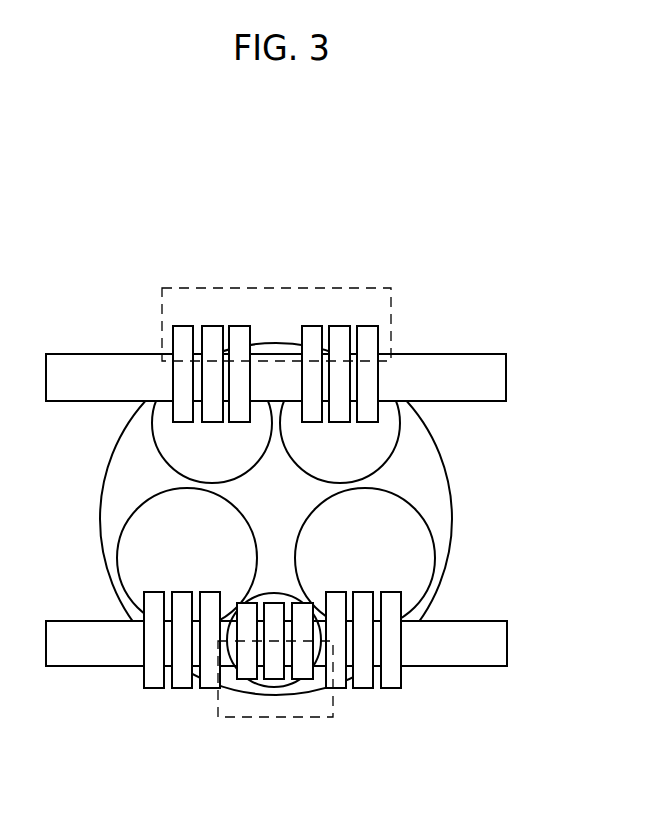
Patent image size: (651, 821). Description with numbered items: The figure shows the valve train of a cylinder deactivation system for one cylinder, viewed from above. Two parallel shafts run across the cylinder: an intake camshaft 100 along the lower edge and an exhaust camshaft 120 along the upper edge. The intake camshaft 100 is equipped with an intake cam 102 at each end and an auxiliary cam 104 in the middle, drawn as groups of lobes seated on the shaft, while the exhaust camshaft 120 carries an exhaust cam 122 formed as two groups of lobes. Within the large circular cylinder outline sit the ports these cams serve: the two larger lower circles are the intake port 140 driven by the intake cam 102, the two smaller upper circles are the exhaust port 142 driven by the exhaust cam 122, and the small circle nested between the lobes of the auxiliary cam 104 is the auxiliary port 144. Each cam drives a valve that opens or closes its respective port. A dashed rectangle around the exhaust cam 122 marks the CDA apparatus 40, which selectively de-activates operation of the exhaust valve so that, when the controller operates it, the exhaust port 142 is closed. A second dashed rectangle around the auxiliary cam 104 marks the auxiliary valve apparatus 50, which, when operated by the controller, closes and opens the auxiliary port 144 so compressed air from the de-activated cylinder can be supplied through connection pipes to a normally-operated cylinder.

The cylinder deactivation (CDA) apparatus 40 is at (392, 306).
The auxiliary valve apparatus 50 is at (245, 718).
The intake camshaft 100 is at (508, 643).
The intake cam 102 is at (154, 689).
The auxiliary cam 104 is at (308, 680).
The exhaust camshaft 120 is at (508, 378).
The exhaust cam 122 is at (240, 326).
The intake port 140 is at (128, 520).
The exhaust port 142 is at (156, 447).
The auxiliary port 144 is at (285, 593).